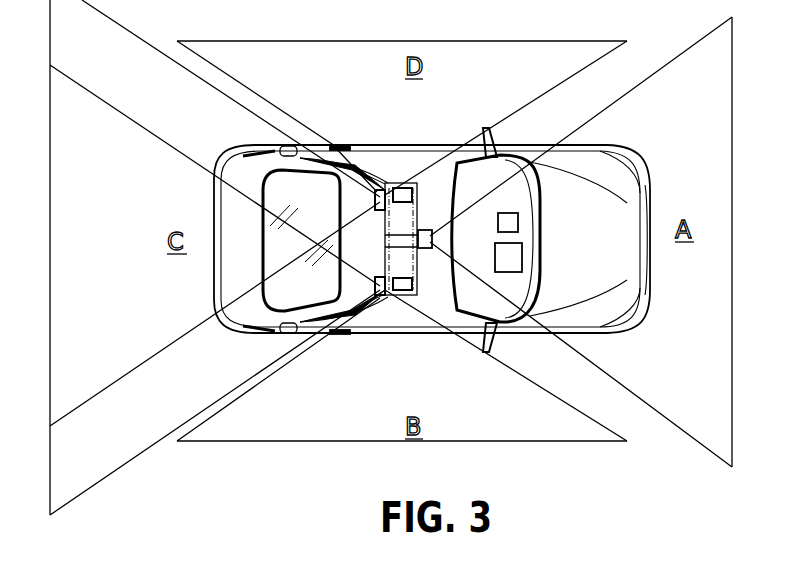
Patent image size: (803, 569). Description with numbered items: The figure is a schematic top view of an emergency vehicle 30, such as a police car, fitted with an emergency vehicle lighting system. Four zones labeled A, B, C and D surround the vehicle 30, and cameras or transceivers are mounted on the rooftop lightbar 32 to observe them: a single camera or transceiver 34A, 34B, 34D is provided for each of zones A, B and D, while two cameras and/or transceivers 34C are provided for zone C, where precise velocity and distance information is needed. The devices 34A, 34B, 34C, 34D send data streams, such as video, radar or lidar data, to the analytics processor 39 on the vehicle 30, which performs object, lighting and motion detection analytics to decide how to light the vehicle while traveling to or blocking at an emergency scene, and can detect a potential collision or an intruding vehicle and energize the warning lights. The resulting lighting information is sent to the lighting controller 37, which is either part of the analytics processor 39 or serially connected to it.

The vehicle 30 is at (632, 135).
The rooftop lightbar 32 is at (435, 280).
The camera or transceiver 34A is at (438, 232).
The camera or transceiver 34B is at (406, 292).
The cameras and/or transceivers 34C is at (377, 195).
The camera or transceiver 34D is at (392, 190).
The lighting controller 37 is at (518, 222).
The analytics processor 39 is at (518, 258).